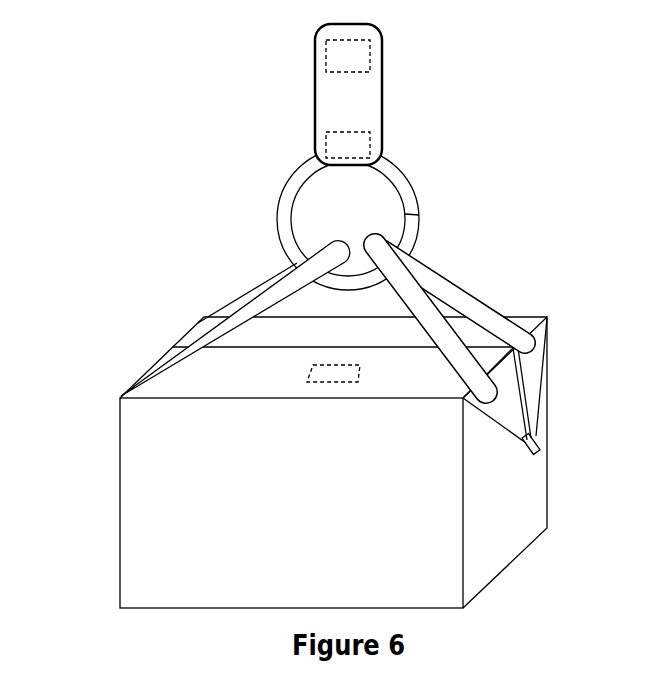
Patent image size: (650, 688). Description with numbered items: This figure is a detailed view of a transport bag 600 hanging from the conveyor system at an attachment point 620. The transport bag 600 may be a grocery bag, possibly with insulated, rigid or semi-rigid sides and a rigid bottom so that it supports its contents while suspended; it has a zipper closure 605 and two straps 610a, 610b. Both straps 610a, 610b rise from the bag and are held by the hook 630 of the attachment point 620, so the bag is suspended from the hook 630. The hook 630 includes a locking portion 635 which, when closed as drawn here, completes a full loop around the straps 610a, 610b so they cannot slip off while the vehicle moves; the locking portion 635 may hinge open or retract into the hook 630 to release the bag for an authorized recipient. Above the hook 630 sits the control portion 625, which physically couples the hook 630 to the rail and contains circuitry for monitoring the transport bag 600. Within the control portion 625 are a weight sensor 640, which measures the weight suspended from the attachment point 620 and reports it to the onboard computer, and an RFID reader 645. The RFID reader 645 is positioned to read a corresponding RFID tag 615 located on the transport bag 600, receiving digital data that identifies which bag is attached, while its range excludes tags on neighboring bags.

The transport bag 600 is at (128, 520).
The zipper closure 605 is at (548, 428).
The first strap 610a is at (165, 362).
The second strap 610b is at (455, 283).
The RFID tag 615 is at (330, 383).
The attachment point 620 is at (484, 100).
The control portion 625 is at (308, 78).
The hook 630 is at (277, 232).
The locking portion 635 is at (410, 165).
The weight sensor 640 is at (363, 62).
The RFID reader 645 is at (340, 143).